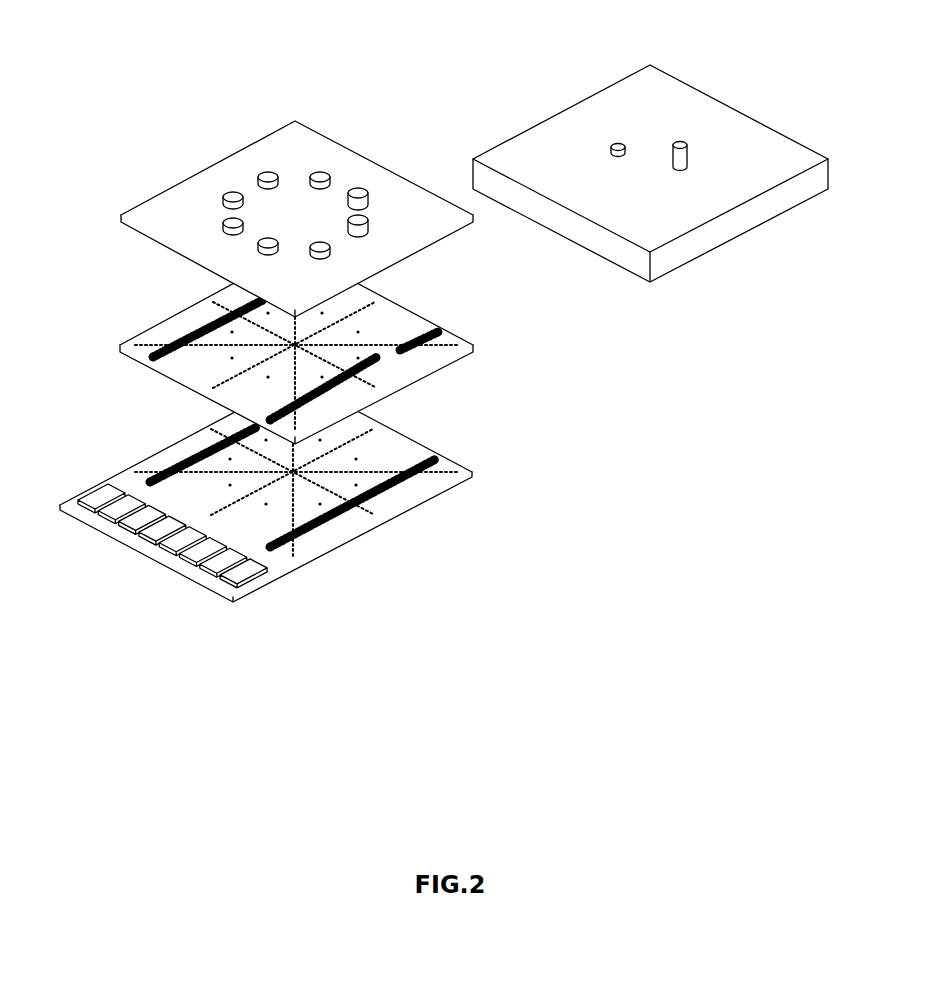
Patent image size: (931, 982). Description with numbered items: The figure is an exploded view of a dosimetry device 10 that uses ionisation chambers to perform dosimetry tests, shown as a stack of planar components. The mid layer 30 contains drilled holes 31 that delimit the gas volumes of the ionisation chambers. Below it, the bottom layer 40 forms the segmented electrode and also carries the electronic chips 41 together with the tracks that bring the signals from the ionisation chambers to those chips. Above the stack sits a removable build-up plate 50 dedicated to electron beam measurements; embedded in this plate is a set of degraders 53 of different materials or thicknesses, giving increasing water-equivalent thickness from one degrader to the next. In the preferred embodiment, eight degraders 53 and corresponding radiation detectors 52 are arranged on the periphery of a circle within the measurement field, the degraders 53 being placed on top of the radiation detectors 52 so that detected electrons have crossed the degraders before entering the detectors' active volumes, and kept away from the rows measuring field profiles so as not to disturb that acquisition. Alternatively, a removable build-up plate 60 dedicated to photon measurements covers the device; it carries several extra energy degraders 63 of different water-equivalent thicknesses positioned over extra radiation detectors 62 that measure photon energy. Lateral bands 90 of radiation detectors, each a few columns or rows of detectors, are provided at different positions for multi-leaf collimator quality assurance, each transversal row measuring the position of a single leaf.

The dosimetry device 10 is at (270, 95).
The mid layer 30 is at (170, 327).
The drilled holes 31 is at (437, 333).
The bottom layer 40 is at (95, 497).
The electronic chips 41 is at (243, 568).
The removable build-up plate for electron beams 50 is at (172, 195).
The radiation detectors 52 is at (363, 453).
The degraders 53 is at (243, 220).
The removable build-up plate for photon beams 60 is at (522, 145).
The extra radiation detectors 62 is at (222, 488).
The extra energy degraders 63 is at (693, 160).
The lateral bands of radiation detectors 90 is at (190, 457).